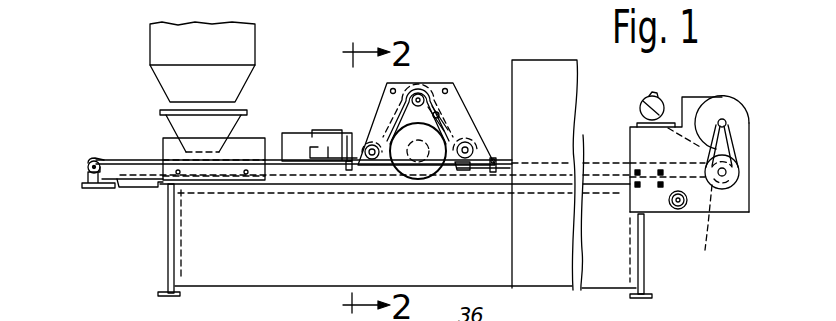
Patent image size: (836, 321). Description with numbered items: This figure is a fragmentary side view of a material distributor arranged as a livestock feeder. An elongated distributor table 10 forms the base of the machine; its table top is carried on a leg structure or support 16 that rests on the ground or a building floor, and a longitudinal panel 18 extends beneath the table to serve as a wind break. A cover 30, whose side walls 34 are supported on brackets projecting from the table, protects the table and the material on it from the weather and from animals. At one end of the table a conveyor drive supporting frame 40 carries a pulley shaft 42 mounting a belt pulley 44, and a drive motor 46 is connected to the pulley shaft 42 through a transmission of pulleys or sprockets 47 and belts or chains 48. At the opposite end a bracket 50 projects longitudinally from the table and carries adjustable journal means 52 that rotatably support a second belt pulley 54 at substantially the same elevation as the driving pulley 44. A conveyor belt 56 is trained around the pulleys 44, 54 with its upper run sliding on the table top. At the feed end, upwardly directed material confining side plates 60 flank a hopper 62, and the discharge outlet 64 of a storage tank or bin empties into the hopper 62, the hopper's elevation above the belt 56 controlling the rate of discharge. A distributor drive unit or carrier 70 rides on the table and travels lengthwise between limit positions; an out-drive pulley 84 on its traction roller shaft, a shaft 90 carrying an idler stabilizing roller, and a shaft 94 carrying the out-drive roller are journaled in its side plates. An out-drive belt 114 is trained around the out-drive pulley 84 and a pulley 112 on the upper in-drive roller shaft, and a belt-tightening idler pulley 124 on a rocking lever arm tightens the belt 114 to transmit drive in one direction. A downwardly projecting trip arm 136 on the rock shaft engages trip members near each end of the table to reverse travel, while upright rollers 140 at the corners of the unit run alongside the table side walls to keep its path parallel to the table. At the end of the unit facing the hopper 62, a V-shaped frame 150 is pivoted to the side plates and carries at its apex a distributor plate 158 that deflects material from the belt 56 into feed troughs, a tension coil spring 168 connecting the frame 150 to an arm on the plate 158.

The distributor table 10 is at (590, 170).
The leg structure 16 is at (167, 263).
The longitudinal panel 18 is at (258, 272).
The cover 30 is at (537, 58).
The side walls 34 is at (562, 108).
The conveyor drive supporting frame 40 is at (735, 205).
The pulley shaft 42 is at (739, 172).
The belt pulley 44 is at (704, 229).
The drive motor 46 is at (645, 101).
The pulleys or sprockets 47 is at (737, 110).
The belts or chains 48 is at (688, 97).
The bracket 50 is at (118, 189).
The adjustable journal means 52 is at (84, 185).
The belt pulley 54 is at (105, 160).
The conveyor belt 56 is at (137, 159).
The material confining side plates 60 is at (248, 146).
The hopper 62 is at (166, 116).
The discharge outlet 64 is at (168, 42).
The distributor drive unit 70 is at (447, 78).
The out-drive pulley 84 is at (425, 166).
The shaft 90 is at (371, 163).
The shaft 94 is at (468, 151).
The pulley 112 is at (418, 94).
The out-drive belt 114 is at (410, 107).
The belt-tightening idler pulley 124 is at (438, 118).
The trip arm 136 is at (456, 170).
The upright rollers 140 is at (347, 171).
The frame 150 is at (330, 159).
The distributor plate 158 is at (288, 147).
The tension coil spring 168 is at (322, 129).